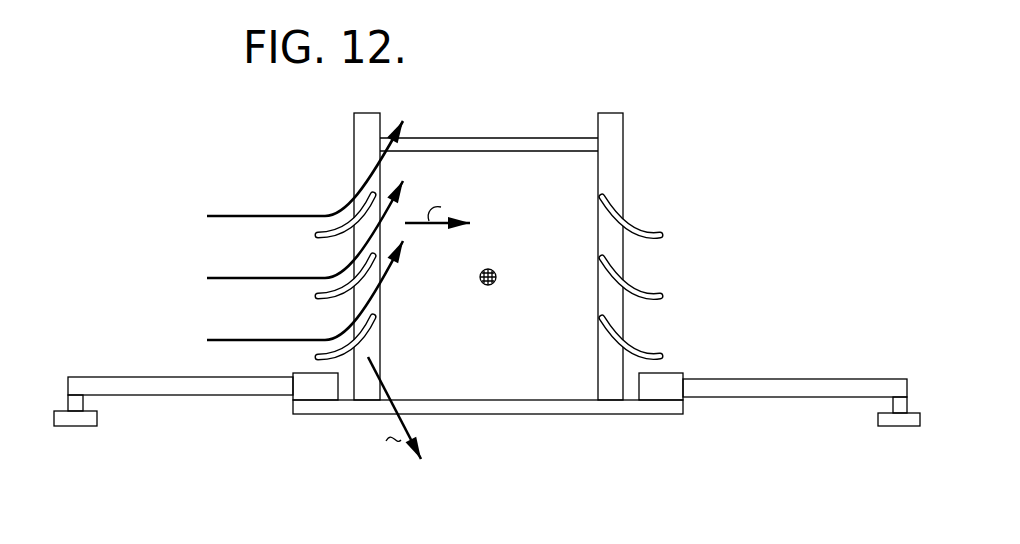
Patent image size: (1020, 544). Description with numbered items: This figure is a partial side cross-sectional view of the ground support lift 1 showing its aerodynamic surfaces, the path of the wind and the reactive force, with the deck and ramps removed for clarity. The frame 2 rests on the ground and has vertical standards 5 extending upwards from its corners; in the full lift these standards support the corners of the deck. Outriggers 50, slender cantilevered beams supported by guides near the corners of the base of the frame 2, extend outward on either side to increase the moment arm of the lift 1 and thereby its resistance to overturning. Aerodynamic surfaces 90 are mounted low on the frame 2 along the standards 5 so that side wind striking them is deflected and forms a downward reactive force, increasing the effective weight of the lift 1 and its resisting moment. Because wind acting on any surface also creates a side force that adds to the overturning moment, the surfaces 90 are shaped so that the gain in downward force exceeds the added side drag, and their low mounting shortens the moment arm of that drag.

The ground support lift 1 is at (710, 182).
The frame 2 is at (663, 410).
The vertical standards 5 is at (358, 153).
The outriggers 50 is at (183, 390).
The aerodynamic surfaces 90 is at (648, 350).